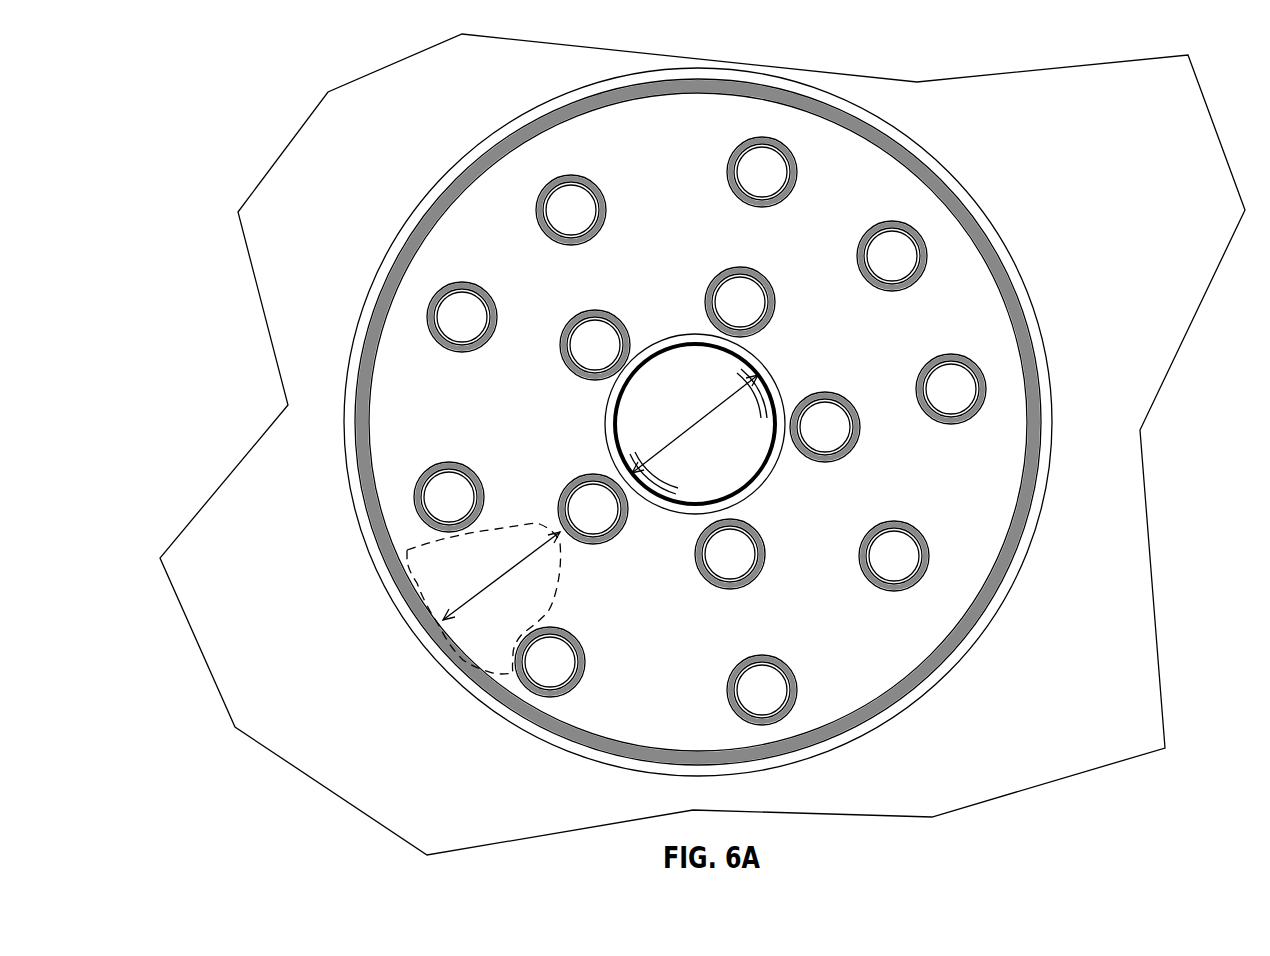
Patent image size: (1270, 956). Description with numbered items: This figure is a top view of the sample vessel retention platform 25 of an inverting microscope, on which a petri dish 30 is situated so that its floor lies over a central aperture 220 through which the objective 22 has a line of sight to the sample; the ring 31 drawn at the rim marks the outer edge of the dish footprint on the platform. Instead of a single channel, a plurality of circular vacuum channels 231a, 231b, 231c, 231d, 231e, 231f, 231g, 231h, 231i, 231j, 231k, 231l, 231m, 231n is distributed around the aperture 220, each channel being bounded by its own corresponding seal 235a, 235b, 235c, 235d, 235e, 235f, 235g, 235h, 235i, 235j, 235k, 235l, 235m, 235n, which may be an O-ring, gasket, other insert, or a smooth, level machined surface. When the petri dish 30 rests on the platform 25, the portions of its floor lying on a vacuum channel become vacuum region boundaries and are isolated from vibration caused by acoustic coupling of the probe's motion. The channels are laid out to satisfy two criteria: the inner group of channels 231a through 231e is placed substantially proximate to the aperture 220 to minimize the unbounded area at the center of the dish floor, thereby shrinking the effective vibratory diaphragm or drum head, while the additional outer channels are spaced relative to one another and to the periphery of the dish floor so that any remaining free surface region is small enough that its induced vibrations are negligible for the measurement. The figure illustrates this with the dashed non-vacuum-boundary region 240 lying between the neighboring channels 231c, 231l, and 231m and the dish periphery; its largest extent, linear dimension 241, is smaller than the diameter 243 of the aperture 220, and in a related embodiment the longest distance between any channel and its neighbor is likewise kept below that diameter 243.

The objective 22 is at (740, 472).
The platform 25 is at (323, 204).
The petri dish 30 is at (368, 522).
The ring band 31 is at (408, 627).
The aperture 220 is at (776, 374).
The diameter 243 is at (677, 428).
The region 240 is at (458, 576).
The linear dimension 241 is at (478, 598).
The seal 235a is at (758, 243).
The vacuum channel 231a is at (740, 277).
The seal 235b is at (598, 311).
The vacuum channel 231b is at (596, 370).
The seal 235c is at (566, 486).
The vacuum channel 231c is at (613, 521).
The seal 235d is at (764, 565).
The vacuum channel 231d is at (730, 579).
The seal 235e is at (830, 393).
The vacuum channel 231e is at (826, 452).
The seal 235f is at (896, 522).
The vacuum channel 231f is at (894, 581).
The seal 235g is at (952, 354).
The vacuum channel 231g is at (951, 414).
The seal 235h is at (892, 221).
The vacuum channel 231h is at (892, 281).
The seal 235i is at (773, 139).
The vacuum channel 231i is at (737, 172).
The seal 235j is at (572, 175).
The vacuum channel 231j is at (572, 235).
The seal 235k is at (464, 283).
The vacuum channel 231k is at (462, 342).
The seal 235l is at (452, 462).
The vacuum channel 231l is at (424, 497).
The seal 235m is at (553, 627).
The vacuum channel 231m is at (567, 680).
The seal 235n is at (765, 656).
The vacuum channel 231n is at (762, 715).